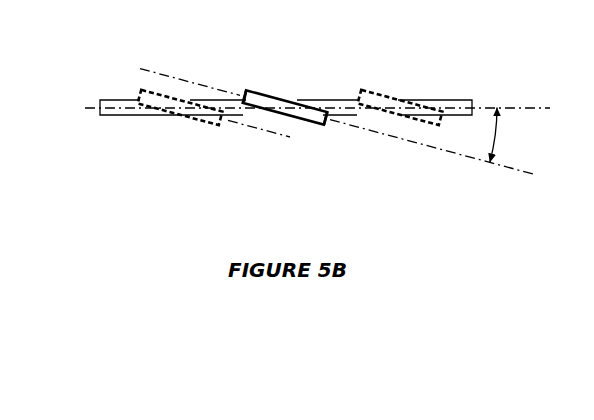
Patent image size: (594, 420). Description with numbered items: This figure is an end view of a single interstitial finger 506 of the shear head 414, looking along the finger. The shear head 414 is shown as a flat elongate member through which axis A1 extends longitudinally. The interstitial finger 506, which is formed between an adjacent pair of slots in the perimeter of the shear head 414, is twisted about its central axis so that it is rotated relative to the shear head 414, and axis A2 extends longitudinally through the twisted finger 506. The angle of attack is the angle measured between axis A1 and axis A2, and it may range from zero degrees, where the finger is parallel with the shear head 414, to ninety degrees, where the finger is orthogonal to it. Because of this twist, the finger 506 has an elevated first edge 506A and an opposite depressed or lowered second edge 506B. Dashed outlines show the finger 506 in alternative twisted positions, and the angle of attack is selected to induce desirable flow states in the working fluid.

The shear head 414 is at (102, 98).
The interstitial finger 506 is at (282, 91).
The first edge 506A is at (246, 91).
The second edge 506B is at (331, 110).
The axis A1 is at (455, 107).
The axis A2 is at (251, 125).